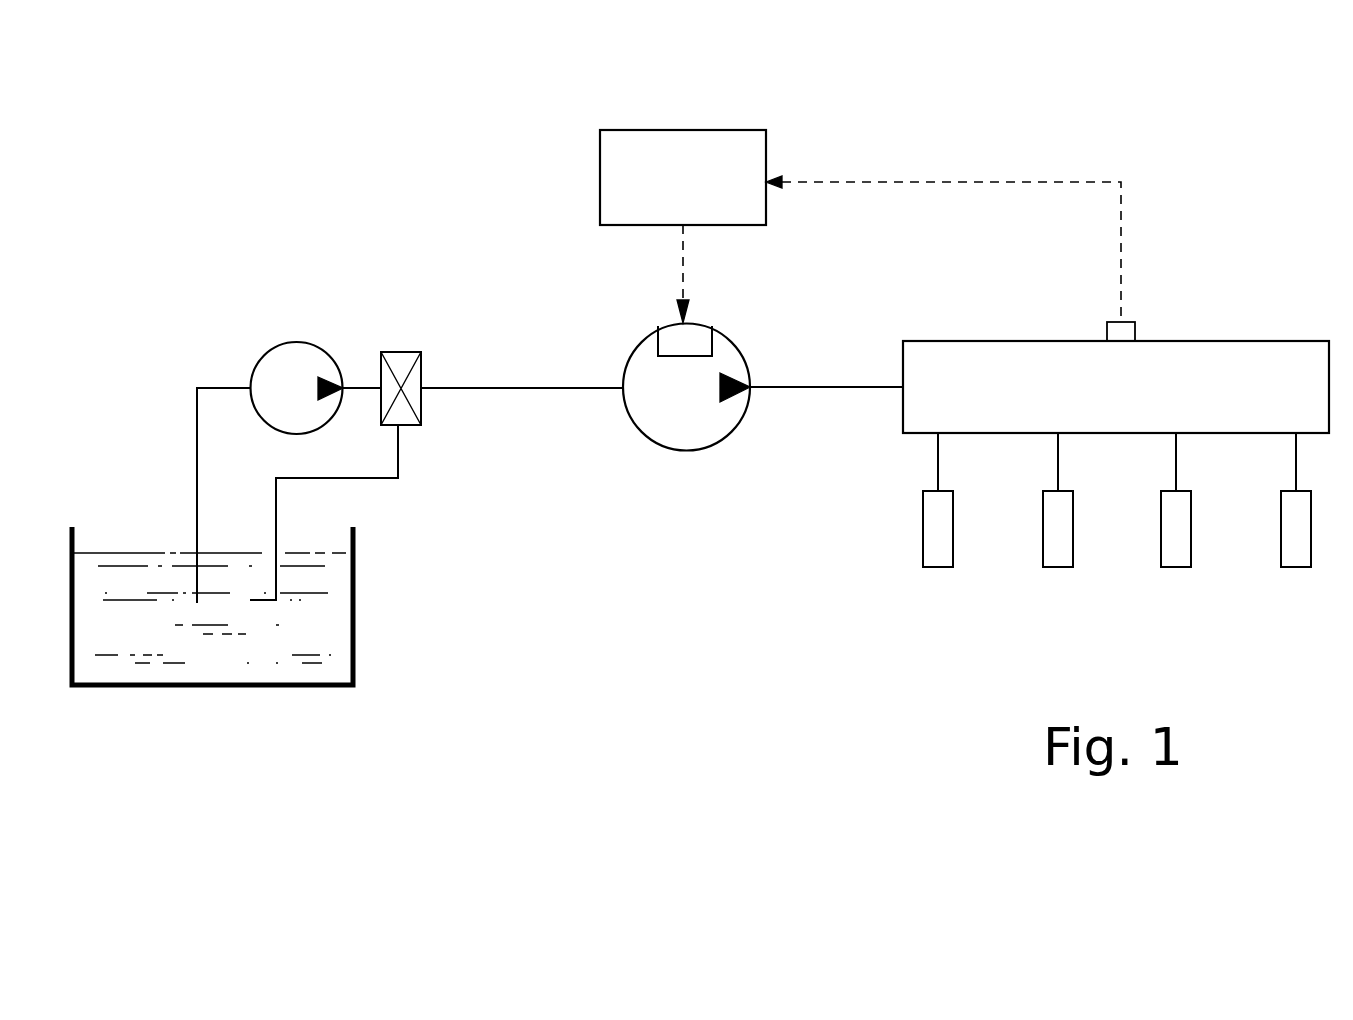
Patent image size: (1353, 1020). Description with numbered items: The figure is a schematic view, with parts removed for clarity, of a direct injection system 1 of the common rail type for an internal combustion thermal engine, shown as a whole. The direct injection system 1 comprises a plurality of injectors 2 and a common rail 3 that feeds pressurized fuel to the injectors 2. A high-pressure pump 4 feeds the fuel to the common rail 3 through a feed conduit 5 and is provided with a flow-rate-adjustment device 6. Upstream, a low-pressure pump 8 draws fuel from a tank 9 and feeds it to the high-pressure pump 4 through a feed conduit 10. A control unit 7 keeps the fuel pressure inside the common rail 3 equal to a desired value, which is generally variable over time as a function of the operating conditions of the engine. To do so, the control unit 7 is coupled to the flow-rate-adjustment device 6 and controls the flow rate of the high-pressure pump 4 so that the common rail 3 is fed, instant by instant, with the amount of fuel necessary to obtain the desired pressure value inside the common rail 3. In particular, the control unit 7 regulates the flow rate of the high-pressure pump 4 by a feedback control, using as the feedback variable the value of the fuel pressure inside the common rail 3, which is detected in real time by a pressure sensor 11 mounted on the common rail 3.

The direct injection system 1 is at (655, 637).
The injectors 2 is at (938, 558).
The common rail 3 is at (1256, 357).
The high-pressure pump 4 is at (671, 374).
The feed conduit 5 is at (815, 389).
The flow-rate-adjustment device 6 is at (697, 333).
The control unit 7 is at (688, 148).
The low-pressure pump 8 is at (288, 352).
The tank 9 is at (338, 645).
The feed conduit 10 is at (503, 390).
The pressure sensor 11 is at (1127, 330).